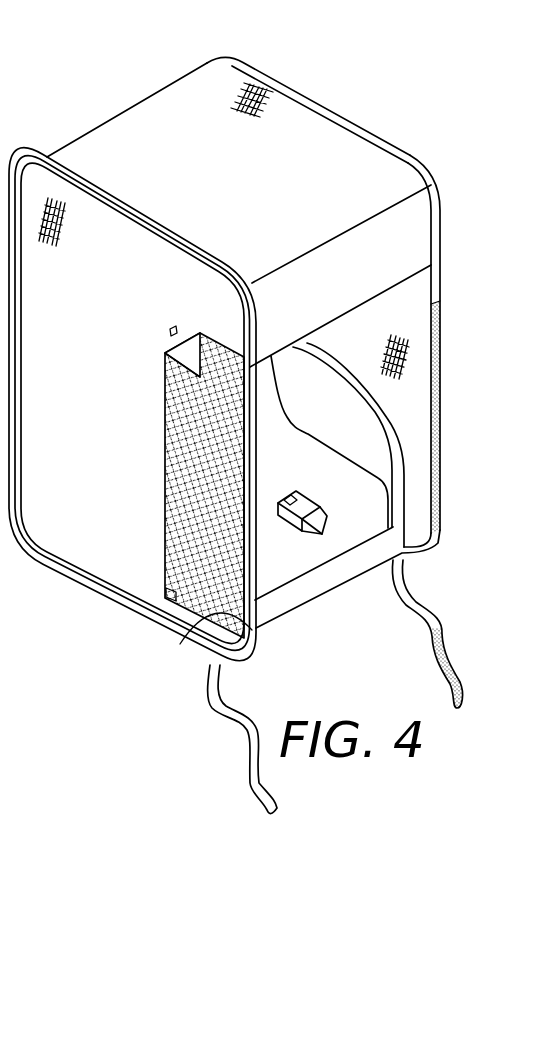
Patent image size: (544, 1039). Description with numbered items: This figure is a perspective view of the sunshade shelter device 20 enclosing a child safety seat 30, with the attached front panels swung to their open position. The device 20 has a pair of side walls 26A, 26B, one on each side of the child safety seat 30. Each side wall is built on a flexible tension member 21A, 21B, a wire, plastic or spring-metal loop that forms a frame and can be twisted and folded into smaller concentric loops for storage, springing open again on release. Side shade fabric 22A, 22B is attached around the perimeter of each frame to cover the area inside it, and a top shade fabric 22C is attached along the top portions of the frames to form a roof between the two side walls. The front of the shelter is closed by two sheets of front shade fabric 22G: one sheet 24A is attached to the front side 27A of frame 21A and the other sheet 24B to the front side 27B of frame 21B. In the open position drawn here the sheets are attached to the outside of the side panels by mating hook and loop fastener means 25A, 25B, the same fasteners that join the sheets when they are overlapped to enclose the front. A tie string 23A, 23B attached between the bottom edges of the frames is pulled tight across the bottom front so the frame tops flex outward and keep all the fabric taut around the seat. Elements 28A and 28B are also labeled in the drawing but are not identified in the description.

The sunshade shelter device 20 is at (148, 88).
The flexible tension member 21A is at (110, 601).
The flexible tension member 21B is at (335, 117).
The side shade fabric 22A is at (53, 197).
The side shade fabric 22B is at (408, 383).
The top shade fabric 22C is at (262, 90).
The front shade fabric 22G is at (183, 550).
The tie string 23A is at (275, 798).
The tie string 23B is at (452, 672).
The sheet of front shade fabric 24A is at (166, 489).
The sheet of front shade fabric 24B is at (441, 340).
The hook and loop fastener means 25A is at (183, 353).
The hook and loop fastener means 25B is at (175, 326).
The side wall 26A is at (118, 196).
The side wall 26B is at (422, 172).
The front side 27A is at (262, 627).
The front side 27B is at (432, 282).
The front frame bottom edge 28A is at (200, 617).
The rear frame bottom corner 28B is at (441, 482).
The child safety seat 30 is at (298, 557).